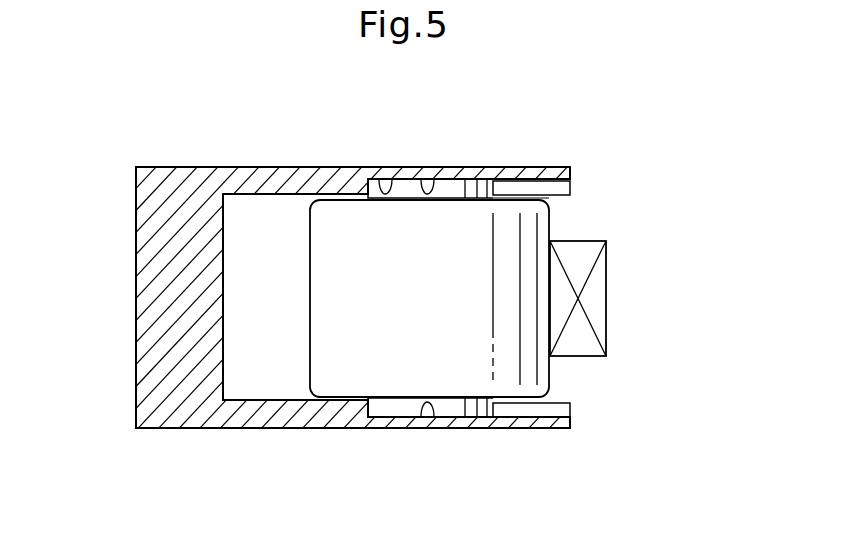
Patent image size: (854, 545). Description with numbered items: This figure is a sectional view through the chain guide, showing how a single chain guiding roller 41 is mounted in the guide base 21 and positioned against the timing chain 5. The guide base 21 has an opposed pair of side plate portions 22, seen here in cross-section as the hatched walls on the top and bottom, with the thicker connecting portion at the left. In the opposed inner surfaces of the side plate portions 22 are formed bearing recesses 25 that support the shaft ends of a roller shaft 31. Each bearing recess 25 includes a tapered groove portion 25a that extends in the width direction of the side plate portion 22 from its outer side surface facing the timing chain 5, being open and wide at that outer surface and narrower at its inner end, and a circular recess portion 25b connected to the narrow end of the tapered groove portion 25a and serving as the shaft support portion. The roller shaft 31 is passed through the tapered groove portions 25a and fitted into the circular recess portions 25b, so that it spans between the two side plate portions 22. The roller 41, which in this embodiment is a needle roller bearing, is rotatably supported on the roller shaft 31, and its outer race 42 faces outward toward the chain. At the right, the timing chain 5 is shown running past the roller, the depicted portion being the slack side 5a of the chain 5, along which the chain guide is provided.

The guide base 21 is at (134, 215).
The side plate portion 22 is at (237, 167).
The bearing recess 25 is at (435, 187).
The tapered groove portion 25a is at (505, 187).
The circular recess portion 25b is at (395, 187).
The roller shaft 31 is at (453, 190).
The chain guiding roller 41 is at (522, 197).
The outer race 42 is at (521, 276).
The timing chain 5 is at (608, 254).
The slack side 5a is at (594, 296).